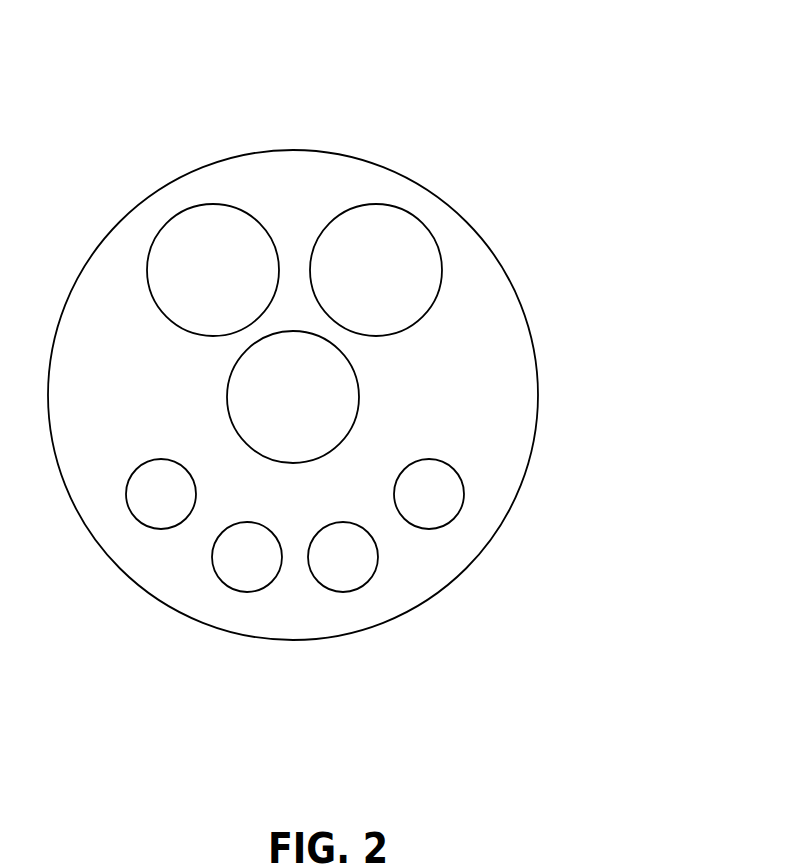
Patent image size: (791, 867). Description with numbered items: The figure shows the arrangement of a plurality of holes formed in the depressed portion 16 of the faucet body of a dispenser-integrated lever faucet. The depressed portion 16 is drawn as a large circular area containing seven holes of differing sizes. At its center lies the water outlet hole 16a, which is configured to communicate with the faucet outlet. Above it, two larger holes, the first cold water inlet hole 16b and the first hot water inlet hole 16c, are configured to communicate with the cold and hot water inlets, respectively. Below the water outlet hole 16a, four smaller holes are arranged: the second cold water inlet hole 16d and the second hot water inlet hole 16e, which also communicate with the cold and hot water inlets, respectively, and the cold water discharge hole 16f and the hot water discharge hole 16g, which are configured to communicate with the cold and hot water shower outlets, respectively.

The depressed portion 16 is at (293, 177).
The water outlet hole 16a is at (327, 393).
The first cold water inlet hole 16b is at (405, 262).
The first hot water inlet hole 16c is at (192, 258).
The second cold water inlet hole 16d is at (435, 500).
The second hot water inlet hole 16e is at (152, 498).
The cold water discharge hole 16f is at (348, 567).
The hot water discharge hole 16g is at (248, 567).